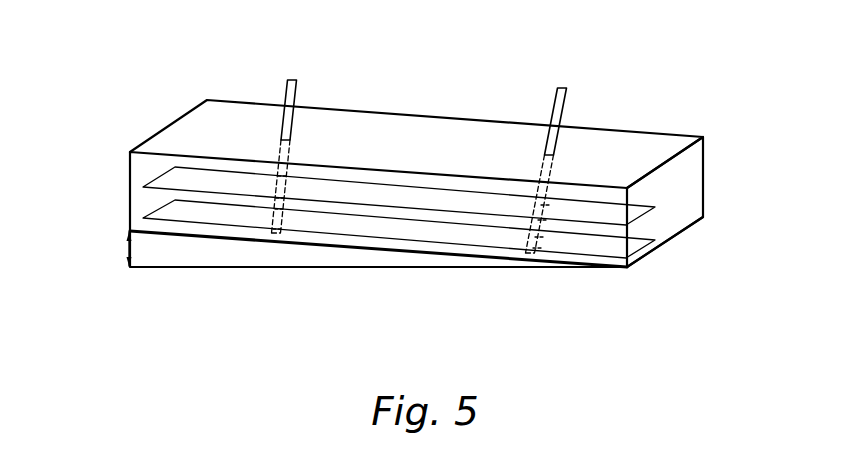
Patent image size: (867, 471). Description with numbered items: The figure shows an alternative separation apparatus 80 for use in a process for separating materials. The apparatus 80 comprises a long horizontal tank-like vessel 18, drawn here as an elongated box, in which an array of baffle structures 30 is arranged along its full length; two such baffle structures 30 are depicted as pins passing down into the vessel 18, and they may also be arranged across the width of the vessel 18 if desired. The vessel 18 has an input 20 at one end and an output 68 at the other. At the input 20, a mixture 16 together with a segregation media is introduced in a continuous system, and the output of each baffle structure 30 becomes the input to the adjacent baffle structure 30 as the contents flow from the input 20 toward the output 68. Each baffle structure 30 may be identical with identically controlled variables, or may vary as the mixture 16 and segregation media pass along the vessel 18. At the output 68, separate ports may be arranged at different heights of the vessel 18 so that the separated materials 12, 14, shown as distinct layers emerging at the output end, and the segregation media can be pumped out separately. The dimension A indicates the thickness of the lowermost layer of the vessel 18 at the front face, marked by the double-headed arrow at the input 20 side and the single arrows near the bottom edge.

The apparatus 80 is at (643, 96).
The vessel 18 is at (436, 113).
The input 20 is at (128, 165).
The mixture 16 is at (142, 202).
The output 68 is at (676, 235).
The material 12 is at (643, 205).
The material 14 is at (643, 241).
The baffle structure 30 is at (292, 78).
The thickness dimension A is at (417, 233).